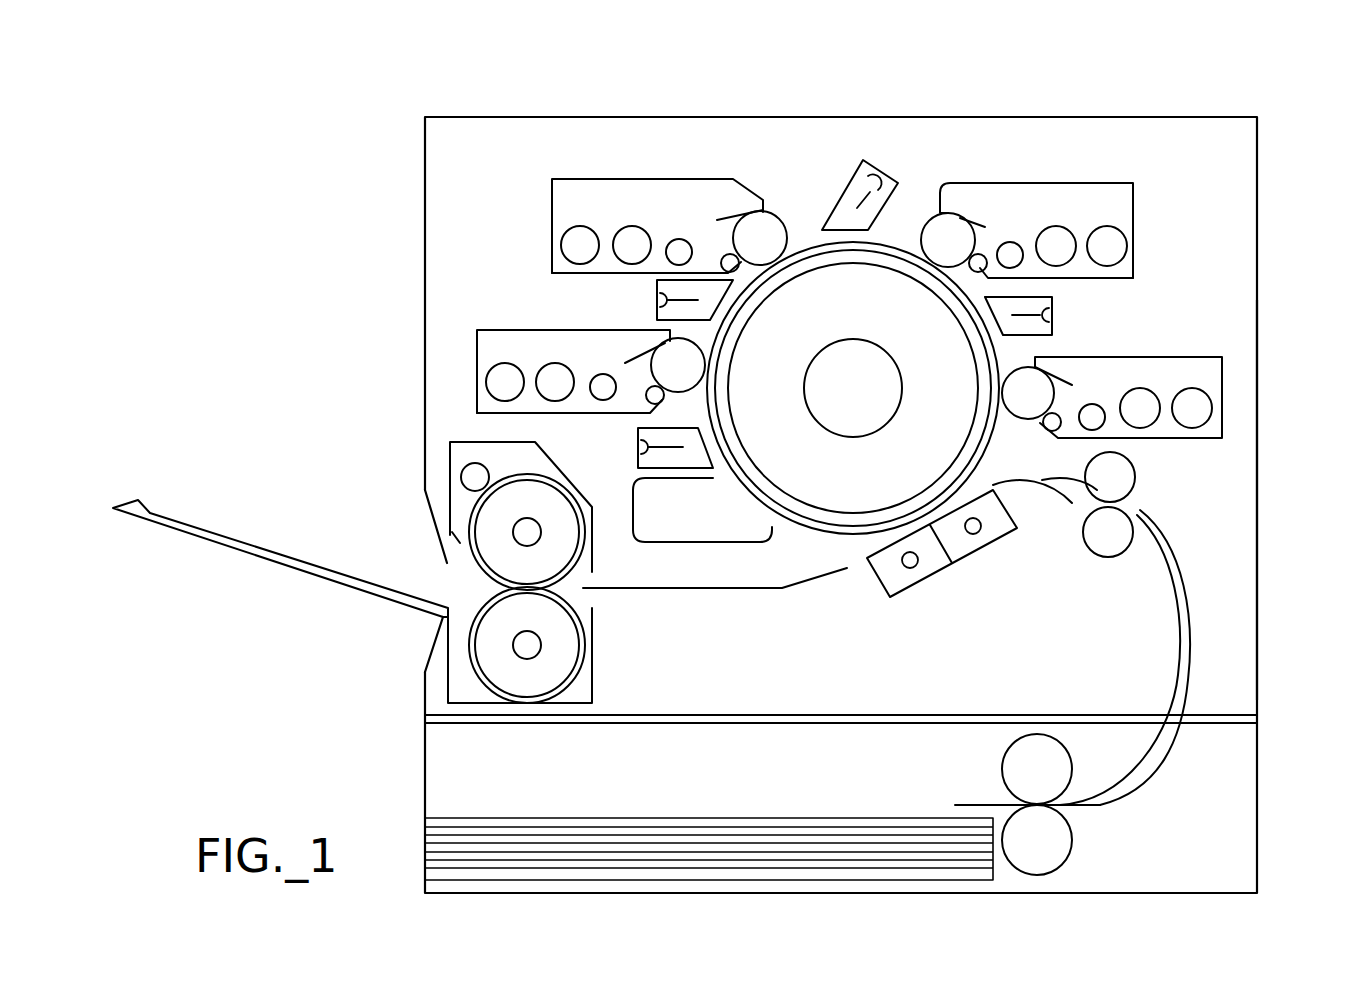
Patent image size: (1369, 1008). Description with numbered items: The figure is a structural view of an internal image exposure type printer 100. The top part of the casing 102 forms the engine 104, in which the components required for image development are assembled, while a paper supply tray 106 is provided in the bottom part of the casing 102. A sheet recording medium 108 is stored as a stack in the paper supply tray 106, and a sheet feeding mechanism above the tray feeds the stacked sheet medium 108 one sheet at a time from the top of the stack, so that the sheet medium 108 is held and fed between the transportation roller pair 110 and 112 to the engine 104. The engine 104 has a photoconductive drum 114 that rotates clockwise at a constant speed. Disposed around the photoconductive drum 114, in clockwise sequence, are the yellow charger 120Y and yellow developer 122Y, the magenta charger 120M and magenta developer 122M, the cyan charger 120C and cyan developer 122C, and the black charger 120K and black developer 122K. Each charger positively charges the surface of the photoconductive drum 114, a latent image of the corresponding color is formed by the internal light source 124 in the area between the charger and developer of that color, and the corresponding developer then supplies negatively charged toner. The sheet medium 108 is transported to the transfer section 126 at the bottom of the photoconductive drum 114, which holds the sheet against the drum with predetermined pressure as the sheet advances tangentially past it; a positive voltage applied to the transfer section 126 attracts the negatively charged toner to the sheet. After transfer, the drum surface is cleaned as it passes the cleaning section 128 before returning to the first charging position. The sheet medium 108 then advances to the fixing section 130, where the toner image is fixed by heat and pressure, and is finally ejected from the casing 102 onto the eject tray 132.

The internal image exposure type printer 100 is at (1091, 96).
The casing 102 is at (1257, 167).
The engine 104 is at (1245, 465).
The paper supply tray 106 is at (868, 878).
The sheet recording medium 108 is at (1230, 612).
The transportation roller pair 110 is at (1070, 832).
The transportation roller pair 112 is at (1137, 472).
The photoconductive drum 114 is at (855, 538).
The cyan charger 120C is at (877, 173).
The black charger 120K is at (1052, 312).
The magenta charger 120M is at (657, 300).
The yellow charger 120Y is at (638, 448).
The cyan developer 122C is at (1068, 183).
The black developer 122K is at (1222, 373).
The magenta developer 122M is at (710, 178).
The yellow developer 122Y is at (527, 330).
The internal light source 124 is at (808, 267).
The transfer section 126 is at (933, 580).
The cleaning section 128 is at (655, 545).
The fixing section 130 is at (447, 663).
The eject tray 132 is at (248, 542).